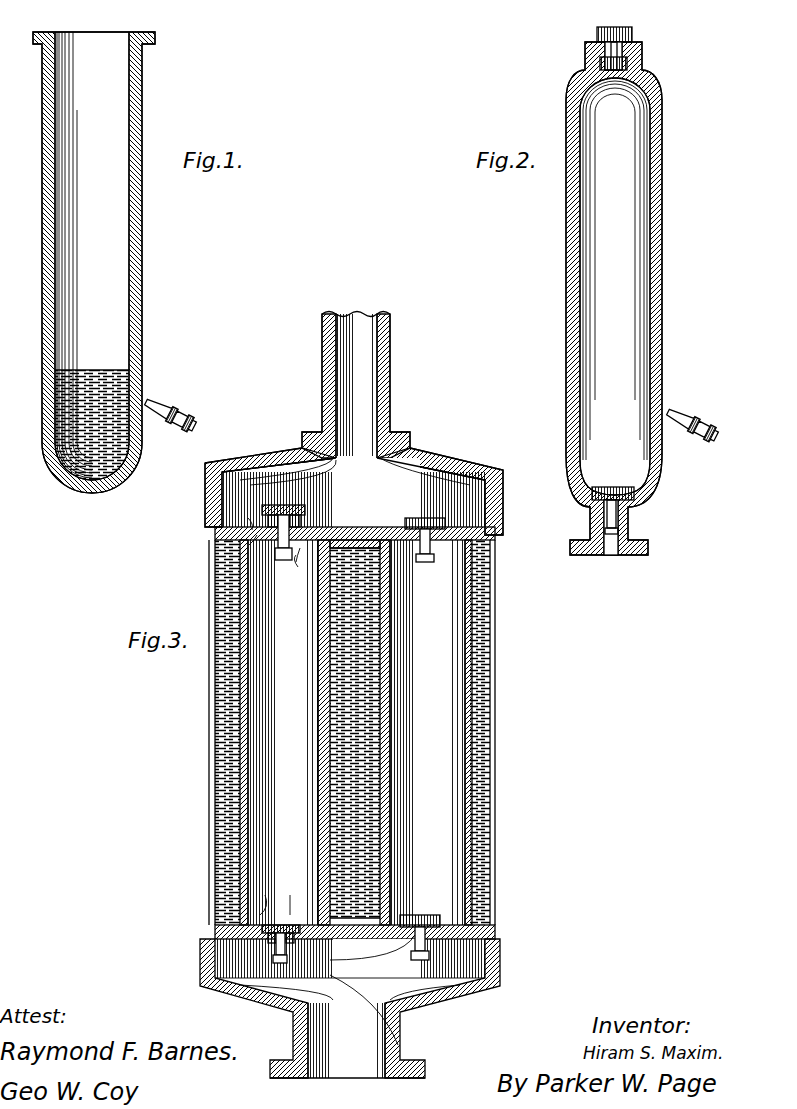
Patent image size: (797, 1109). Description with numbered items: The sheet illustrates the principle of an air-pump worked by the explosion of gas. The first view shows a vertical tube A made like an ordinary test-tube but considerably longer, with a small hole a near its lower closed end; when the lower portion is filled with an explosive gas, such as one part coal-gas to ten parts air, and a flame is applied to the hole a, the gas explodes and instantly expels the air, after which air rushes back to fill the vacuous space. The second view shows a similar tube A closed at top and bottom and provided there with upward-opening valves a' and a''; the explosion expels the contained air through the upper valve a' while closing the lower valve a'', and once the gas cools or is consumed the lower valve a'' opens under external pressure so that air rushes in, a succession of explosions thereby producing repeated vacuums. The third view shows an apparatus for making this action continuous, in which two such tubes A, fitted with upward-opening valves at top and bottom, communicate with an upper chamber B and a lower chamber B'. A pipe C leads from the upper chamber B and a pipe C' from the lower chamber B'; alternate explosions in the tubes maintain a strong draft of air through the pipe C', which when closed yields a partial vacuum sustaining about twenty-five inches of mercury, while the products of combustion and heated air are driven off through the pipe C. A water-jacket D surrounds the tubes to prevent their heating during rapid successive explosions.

In FIG. 1, the vertical tube A is at (96, 263).
In FIG. 2, the vertical tube A is at (624, 298).
In FIG. 3, the vertical tube A is at (356, 732).
In FIG. 1, the small hole a is at (169, 407).
In FIG. 2, the small hole a is at (691, 418).
In FIG. 2, the upper valve a' is at (627, 47).
In FIG. 3, the upper valve a' is at (346, 527).
In FIG. 3, the lower valve a'' is at (351, 927).
In FIG. 3, the upper chamber B is at (354, 498).
In FIG. 3, the lower chamber B' is at (350, 1001).
In FIG. 3, the pipe C is at (359, 385).
In FIG. 3, the pipe C' is at (347, 1040).
In FIG. 3, the water-jacket D is at (494, 679).